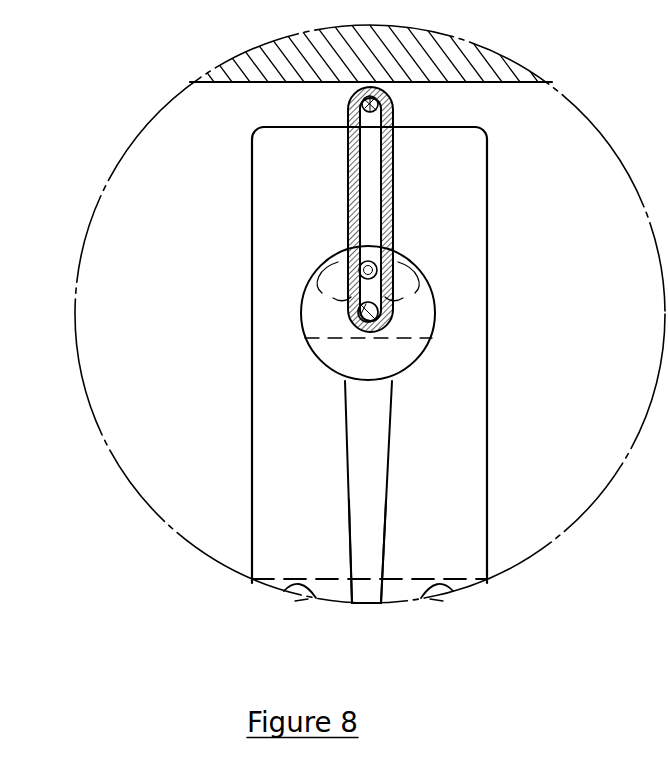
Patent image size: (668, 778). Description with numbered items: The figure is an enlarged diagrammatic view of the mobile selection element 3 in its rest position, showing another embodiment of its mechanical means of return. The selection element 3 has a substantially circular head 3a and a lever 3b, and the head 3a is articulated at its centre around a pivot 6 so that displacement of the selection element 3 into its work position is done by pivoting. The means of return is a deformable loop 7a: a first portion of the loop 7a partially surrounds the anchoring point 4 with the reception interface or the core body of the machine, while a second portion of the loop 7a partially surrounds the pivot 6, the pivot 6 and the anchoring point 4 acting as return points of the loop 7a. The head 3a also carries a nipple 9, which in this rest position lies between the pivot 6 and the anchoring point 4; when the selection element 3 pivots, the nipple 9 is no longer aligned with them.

The selection element 3 is at (350, 427).
The head 3a is at (358, 316).
The lever 3b is at (368, 510).
The anchoring point 4 is at (362, 104).
The pivot 6 is at (362, 340).
The deformable loop 7a is at (393, 167).
The nipple 9 is at (360, 268).